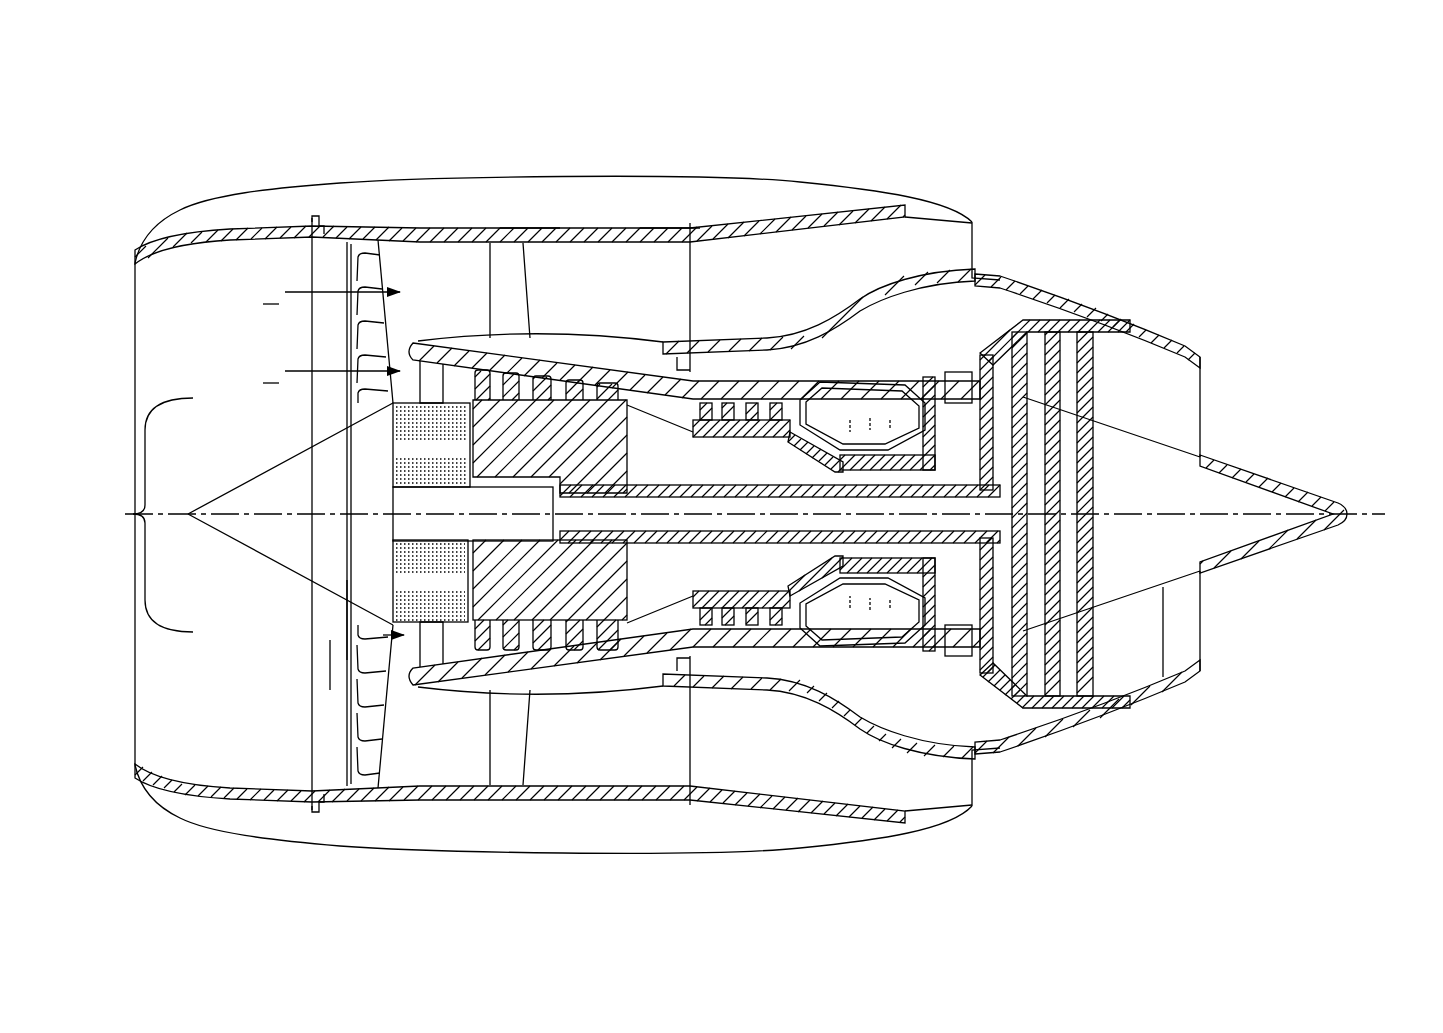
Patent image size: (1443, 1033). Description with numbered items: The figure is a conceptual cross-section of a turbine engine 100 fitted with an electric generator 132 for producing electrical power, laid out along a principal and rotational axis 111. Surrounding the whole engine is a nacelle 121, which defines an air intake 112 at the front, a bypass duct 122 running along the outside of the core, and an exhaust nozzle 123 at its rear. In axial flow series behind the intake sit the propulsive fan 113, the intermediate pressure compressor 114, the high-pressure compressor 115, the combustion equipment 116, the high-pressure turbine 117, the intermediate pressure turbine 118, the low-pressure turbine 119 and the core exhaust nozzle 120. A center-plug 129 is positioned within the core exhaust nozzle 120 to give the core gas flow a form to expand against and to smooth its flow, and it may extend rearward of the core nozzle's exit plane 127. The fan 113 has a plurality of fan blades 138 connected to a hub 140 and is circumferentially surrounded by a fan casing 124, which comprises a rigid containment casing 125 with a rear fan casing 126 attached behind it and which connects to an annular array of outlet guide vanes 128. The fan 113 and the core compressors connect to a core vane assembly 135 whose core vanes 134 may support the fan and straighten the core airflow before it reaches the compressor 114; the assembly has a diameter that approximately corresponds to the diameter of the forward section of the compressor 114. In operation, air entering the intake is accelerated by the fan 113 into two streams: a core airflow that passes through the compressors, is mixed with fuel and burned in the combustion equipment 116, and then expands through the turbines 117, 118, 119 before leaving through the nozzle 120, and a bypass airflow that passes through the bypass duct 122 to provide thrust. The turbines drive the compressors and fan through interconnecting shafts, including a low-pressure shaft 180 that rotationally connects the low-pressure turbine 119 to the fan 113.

The turbine engine 100 is at (150, 88).
The principal and rotational axis 111 is at (1357, 514).
The air intake 112 is at (152, 352).
The propulsive fan 113 is at (338, 660).
The intermediate pressure compressor 114 is at (553, 667).
The high-pressure compressor 115 is at (740, 630).
The combustion equipment 116 is at (867, 632).
The high-pressure turbine 117 is at (923, 370).
The intermediate pressure turbine 118 is at (980, 358).
The low-pressure turbine 119 is at (1037, 338).
The core exhaust nozzle 120 is at (1195, 350).
The nacelle 121 is at (232, 183).
The bypass duct 122 is at (629, 299).
The exhaust nozzle 123 is at (958, 205).
The fan casing 124 is at (528, 222).
The rigid containment casing 125 is at (370, 232).
The rear fan casing 126 is at (660, 235).
The core nozzle exit plane 127 is at (1203, 430).
The outlet guide vanes 128 is at (507, 297).
The center-plug 129 is at (1248, 472).
The electric generator 132 is at (456, 455).
The core vanes 134 is at (413, 356).
The core vane assembly 135 is at (360, 620).
The fan blades 138 is at (385, 410).
The hub 140 is at (282, 462).
The low-pressure shaft 180 is at (747, 507).